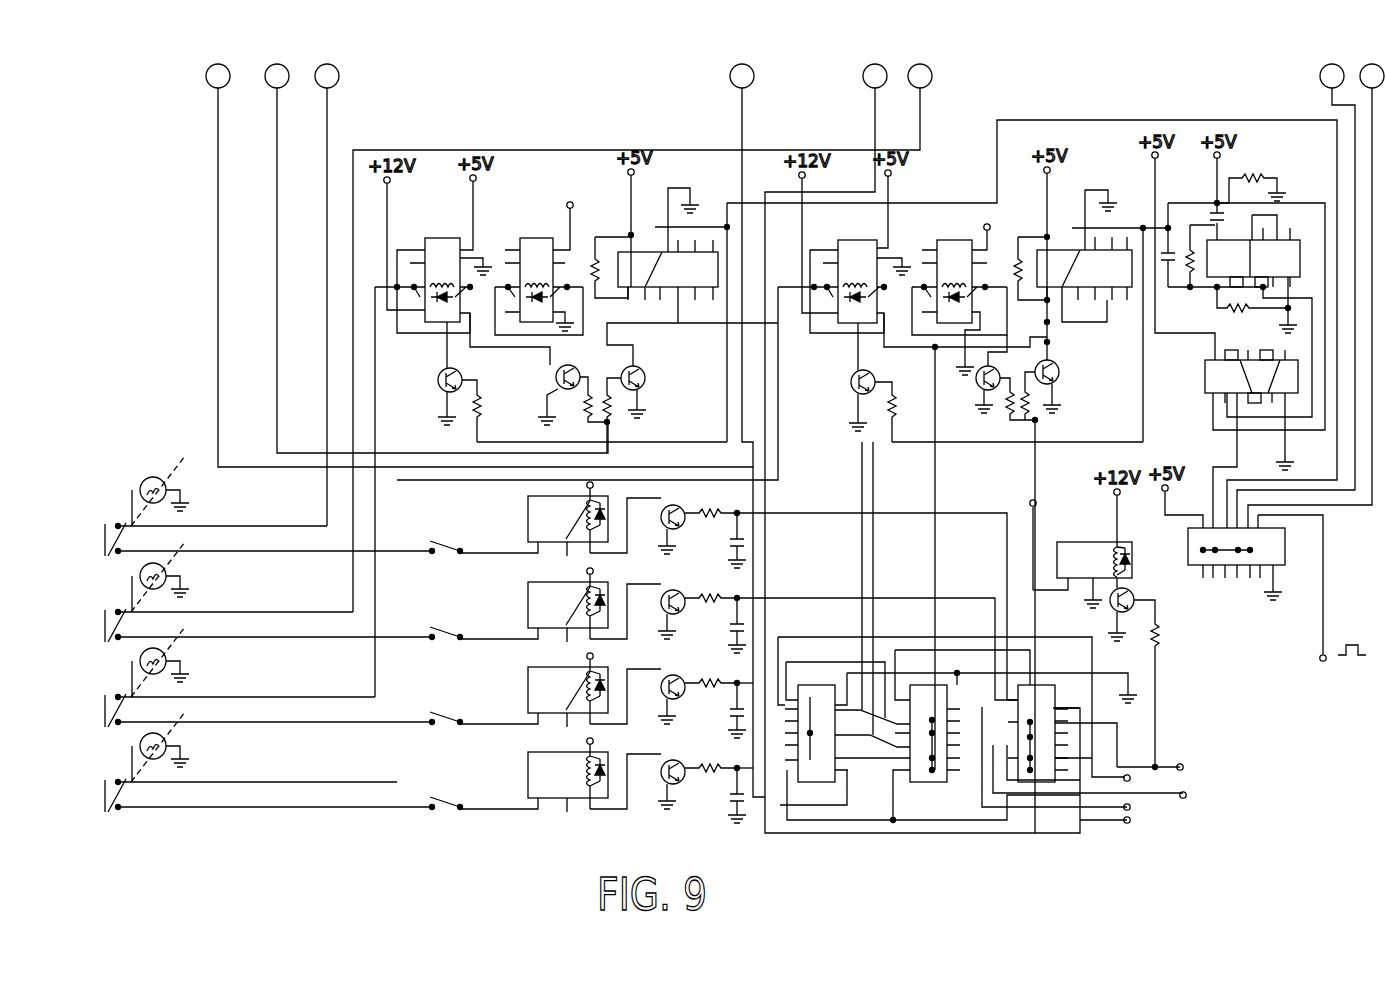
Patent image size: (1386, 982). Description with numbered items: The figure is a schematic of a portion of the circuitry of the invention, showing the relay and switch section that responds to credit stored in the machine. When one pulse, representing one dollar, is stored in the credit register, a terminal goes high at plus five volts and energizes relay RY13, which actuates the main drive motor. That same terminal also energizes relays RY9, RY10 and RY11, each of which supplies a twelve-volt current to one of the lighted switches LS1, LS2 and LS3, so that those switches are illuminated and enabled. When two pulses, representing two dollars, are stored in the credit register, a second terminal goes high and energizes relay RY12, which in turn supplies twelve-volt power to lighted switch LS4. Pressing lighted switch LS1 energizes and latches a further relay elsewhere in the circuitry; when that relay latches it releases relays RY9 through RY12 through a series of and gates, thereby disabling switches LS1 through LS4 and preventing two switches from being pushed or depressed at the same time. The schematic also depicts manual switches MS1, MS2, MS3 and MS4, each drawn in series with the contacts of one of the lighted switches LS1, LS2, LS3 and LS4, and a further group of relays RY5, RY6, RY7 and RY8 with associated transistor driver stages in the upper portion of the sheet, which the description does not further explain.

The lighted switch LS1 is at (100, 539).
The lighted switch LS2 is at (100, 625).
The lighted switch LS3 is at (100, 710).
The lighted switch LS4 is at (100, 795).
The manual switch 1 MS1 is at (453, 536).
The manual switch 2 MS2 is at (453, 621).
The manual switch 3 MS3 is at (453, 706).
The manual switch 4 MS4 is at (453, 791).
The relay 5 RY5 is at (433, 303).
The relay 6 RY6 is at (539, 286).
The relay 7 RY7 is at (844, 305).
The relay 8 RY8 is at (959, 307).
The relay RY9 is at (560, 519).
The relay RY10 is at (560, 605).
The relay RY11 is at (560, 690).
The relay RY12 is at (560, 775).
The relay RY13 is at (1082, 575).